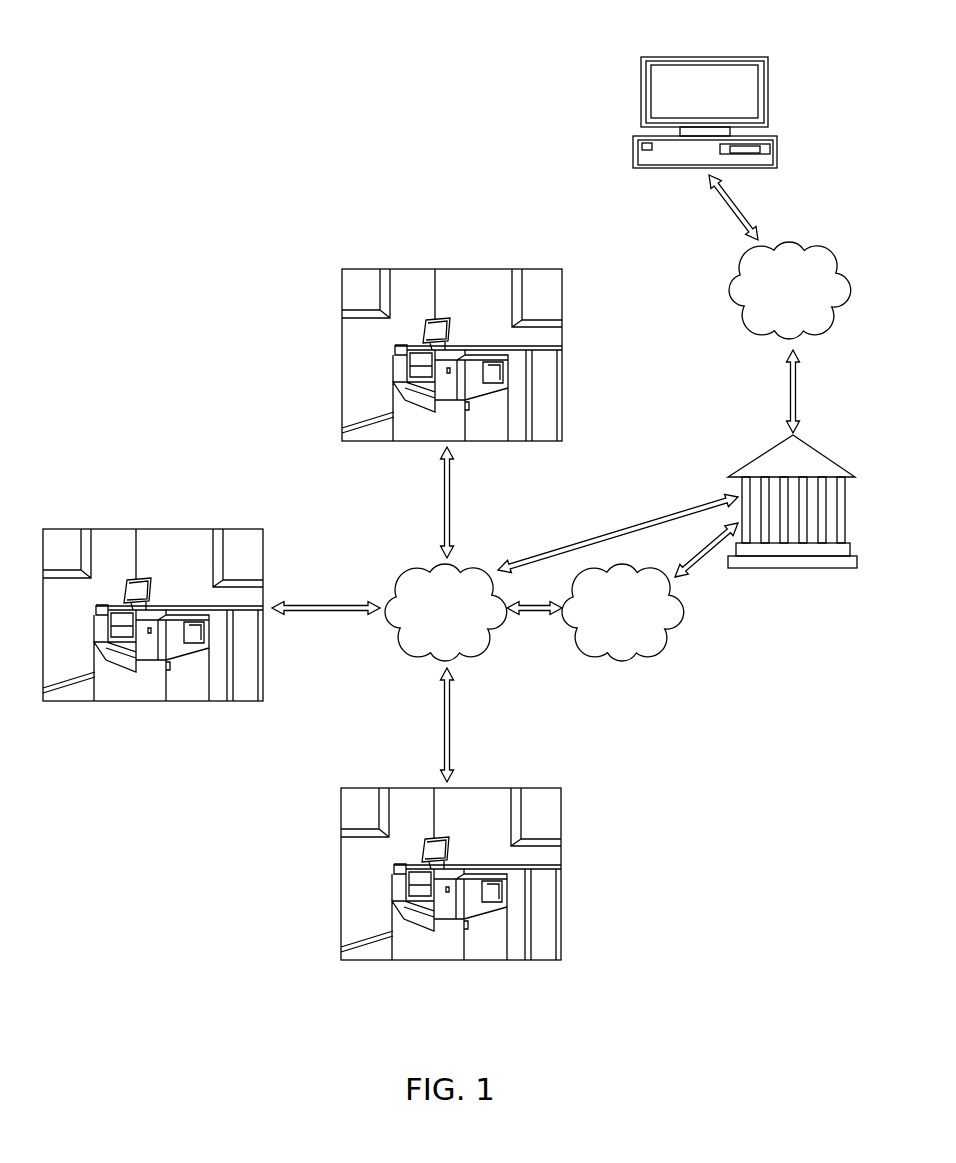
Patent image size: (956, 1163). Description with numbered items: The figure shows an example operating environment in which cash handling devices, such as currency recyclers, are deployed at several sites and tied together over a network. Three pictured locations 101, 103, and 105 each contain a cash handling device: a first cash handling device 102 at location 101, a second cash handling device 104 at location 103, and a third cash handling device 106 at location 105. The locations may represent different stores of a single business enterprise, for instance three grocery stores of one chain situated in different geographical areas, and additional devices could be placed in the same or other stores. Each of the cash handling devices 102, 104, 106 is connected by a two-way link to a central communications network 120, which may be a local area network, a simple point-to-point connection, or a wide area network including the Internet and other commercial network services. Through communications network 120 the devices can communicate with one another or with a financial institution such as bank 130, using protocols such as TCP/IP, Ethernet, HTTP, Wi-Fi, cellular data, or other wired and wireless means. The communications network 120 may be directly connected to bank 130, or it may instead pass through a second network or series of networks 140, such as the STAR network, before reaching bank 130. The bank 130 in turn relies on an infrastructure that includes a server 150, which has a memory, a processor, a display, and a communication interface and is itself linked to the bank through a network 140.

The location 101 is at (465, 280).
The cash handling device 102 is at (413, 428).
The location 103 is at (168, 537).
The cash handling device 104 is at (110, 688).
The location 105 is at (350, 863).
The cash handling device 106 is at (417, 952).
The communications network 120 is at (485, 648).
The bank 130 is at (767, 452).
The network 140 is at (628, 663).
The server 150 is at (738, 55).